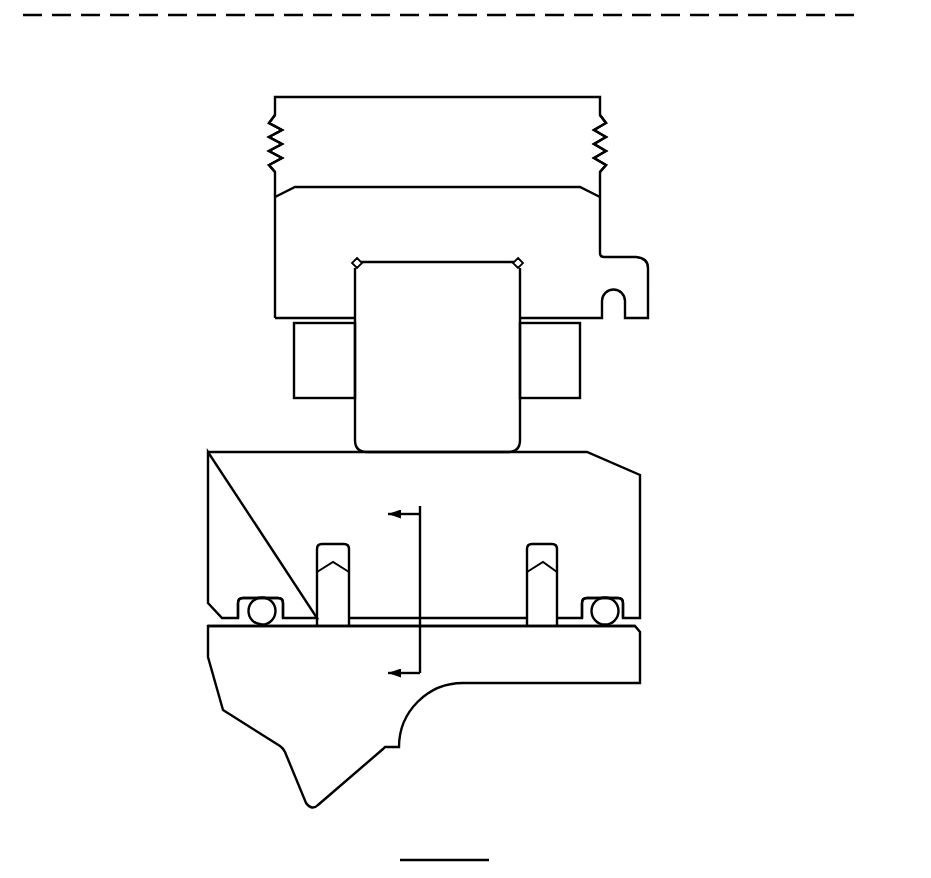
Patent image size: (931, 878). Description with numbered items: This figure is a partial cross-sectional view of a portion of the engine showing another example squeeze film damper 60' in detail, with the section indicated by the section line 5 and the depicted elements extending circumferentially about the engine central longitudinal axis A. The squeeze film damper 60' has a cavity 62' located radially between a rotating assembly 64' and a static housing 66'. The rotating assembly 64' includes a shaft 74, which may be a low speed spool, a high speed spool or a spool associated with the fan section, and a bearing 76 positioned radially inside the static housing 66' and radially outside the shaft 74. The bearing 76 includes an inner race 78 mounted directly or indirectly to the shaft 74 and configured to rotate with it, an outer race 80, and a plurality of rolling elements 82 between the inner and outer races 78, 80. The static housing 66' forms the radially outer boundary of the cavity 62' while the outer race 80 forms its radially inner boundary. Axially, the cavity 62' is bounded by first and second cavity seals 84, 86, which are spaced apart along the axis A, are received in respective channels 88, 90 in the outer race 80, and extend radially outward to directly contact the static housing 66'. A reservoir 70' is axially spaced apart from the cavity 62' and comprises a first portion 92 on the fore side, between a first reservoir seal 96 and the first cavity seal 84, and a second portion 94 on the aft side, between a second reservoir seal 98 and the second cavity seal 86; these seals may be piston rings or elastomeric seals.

The engine central longitudinal axis A is at (145, 17).
The section line 5- 5 is at (408, 576).
The squeeze film damper 60' is at (455, 480).
The cavity 62' is at (421, 644).
The rotating assembly 64' is at (518, 528).
The static housing 66' is at (424, 717).
The reservoir 70' is at (266, 661).
The shaft 74 is at (573, 138).
The bearing 76 is at (522, 207).
The inner race 78 is at (585, 228).
The outer race 80 is at (610, 480).
The rolling elements 82 is at (375, 414).
The first cavity seal 84 is at (328, 585).
The second cavity seal 86 is at (550, 587).
The channel 88 is at (348, 557).
The channel 90 is at (527, 558).
The first portion 92 is at (278, 627).
The second portion 94 is at (588, 620).
The first reservoir seal 96 is at (250, 607).
The second reservoir seal 98 is at (608, 612).